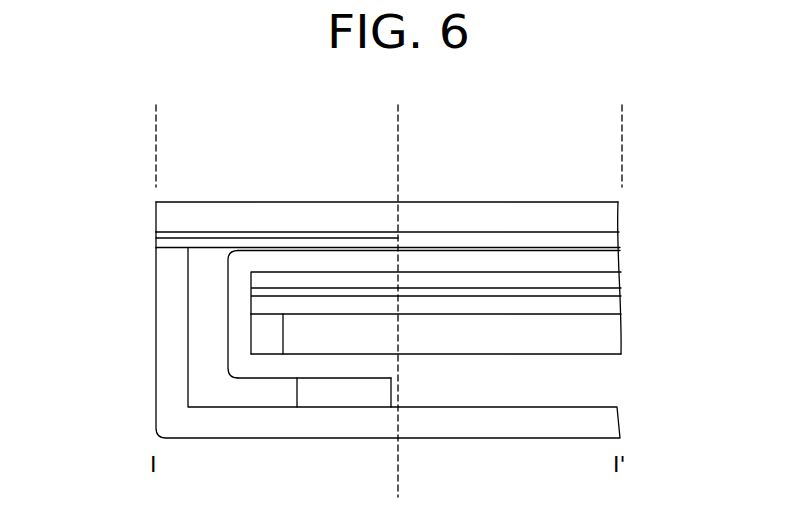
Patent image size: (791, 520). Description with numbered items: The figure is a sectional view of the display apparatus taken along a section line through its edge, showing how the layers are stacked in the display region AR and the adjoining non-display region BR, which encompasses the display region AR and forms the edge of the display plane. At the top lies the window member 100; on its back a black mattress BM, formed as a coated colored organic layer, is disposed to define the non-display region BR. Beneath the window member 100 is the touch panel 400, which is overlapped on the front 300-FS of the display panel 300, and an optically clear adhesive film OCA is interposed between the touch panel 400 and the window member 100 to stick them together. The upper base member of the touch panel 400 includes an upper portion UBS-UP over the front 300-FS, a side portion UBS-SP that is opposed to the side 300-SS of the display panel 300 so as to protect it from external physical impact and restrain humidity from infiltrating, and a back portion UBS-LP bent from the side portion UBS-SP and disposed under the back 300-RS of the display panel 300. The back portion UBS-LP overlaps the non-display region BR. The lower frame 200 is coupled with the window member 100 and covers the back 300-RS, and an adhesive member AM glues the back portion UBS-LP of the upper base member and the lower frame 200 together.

The window member 100 is at (612, 213).
The lower frame 200 is at (605, 425).
The display panel 300 is at (612, 333).
The front of the display panel 300-FS is at (462, 313).
The back of the display panel 300-RS is at (575, 353).
The side of the display panel 300-SS is at (283, 335).
The touch panel 400 is at (640, 250).
The optically clear adhesive film OCA is at (616, 238).
The black mattress BM is at (163, 235).
The adhesive member AM is at (340, 393).
The upper portion of the upper base member UBS-UP is at (570, 248).
The side portion of the upper base member UBS-SP is at (228, 302).
The back portion of the upper base member UBS-LP is at (383, 365).
The non-display region BR is at (398, 116).
The display region AR is at (622, 116).